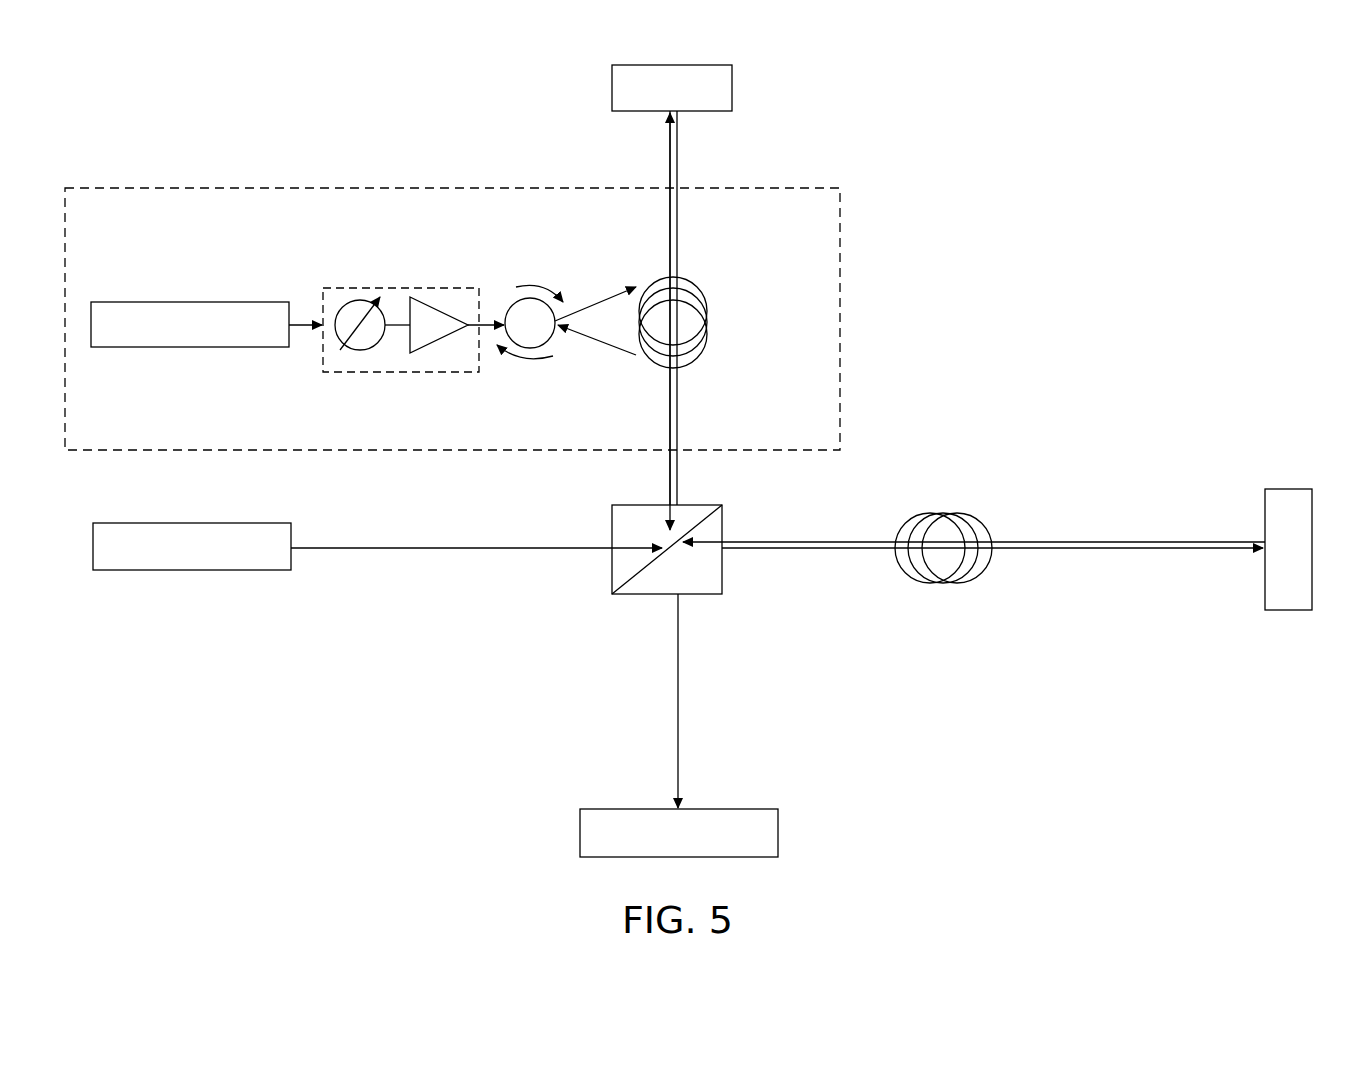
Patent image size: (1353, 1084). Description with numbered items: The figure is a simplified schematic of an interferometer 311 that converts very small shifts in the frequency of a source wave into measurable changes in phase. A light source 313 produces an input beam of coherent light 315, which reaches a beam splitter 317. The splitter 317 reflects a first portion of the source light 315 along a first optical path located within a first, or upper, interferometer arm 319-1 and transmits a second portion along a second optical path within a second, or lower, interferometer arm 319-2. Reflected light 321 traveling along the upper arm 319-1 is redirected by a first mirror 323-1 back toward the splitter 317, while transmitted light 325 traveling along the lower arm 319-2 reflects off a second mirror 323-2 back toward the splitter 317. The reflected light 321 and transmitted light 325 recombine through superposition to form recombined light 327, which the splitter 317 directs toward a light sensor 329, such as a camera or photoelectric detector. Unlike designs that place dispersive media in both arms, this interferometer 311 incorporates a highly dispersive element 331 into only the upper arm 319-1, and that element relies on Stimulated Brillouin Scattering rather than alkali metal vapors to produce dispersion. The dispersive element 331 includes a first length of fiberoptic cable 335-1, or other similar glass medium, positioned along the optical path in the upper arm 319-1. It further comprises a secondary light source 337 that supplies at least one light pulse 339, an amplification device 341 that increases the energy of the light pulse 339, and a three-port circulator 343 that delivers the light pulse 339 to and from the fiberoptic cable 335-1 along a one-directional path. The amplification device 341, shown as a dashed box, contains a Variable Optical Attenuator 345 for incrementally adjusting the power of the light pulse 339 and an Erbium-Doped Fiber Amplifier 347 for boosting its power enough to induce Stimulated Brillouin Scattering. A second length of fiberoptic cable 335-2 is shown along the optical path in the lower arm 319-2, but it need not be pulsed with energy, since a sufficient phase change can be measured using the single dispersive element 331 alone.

The interferometer 311 is at (330, 797).
The light source 313 is at (192, 546).
The input beam of coherent light 315 is at (483, 550).
The beam splitter 317 is at (650, 595).
The first interferometer arm 319-1 is at (825, 146).
The second interferometer arm 319-2 is at (1108, 456).
The reflected light 321 is at (668, 490).
The first mirror 323-1 is at (672, 88).
The second mirror 323-2 is at (1290, 489).
The transmitted light 325 is at (780, 550).
The recombined light 327 is at (677, 745).
The light sensor 329 is at (679, 833).
The dispersive element 331 is at (841, 307).
The first length of fiberoptic cable 335-1 is at (700, 288).
The second length of fiberoptic cable 335-2 is at (955, 585).
The secondary light source 337 is at (190, 324).
The light pulse 339 is at (307, 330).
The amplification device 341 is at (426, 372).
The three-port circulator 343 is at (512, 305).
The Variable Optical Attenuator 345 is at (364, 300).
The Erbium-Doped Fiber Amplifier 347 is at (440, 305).